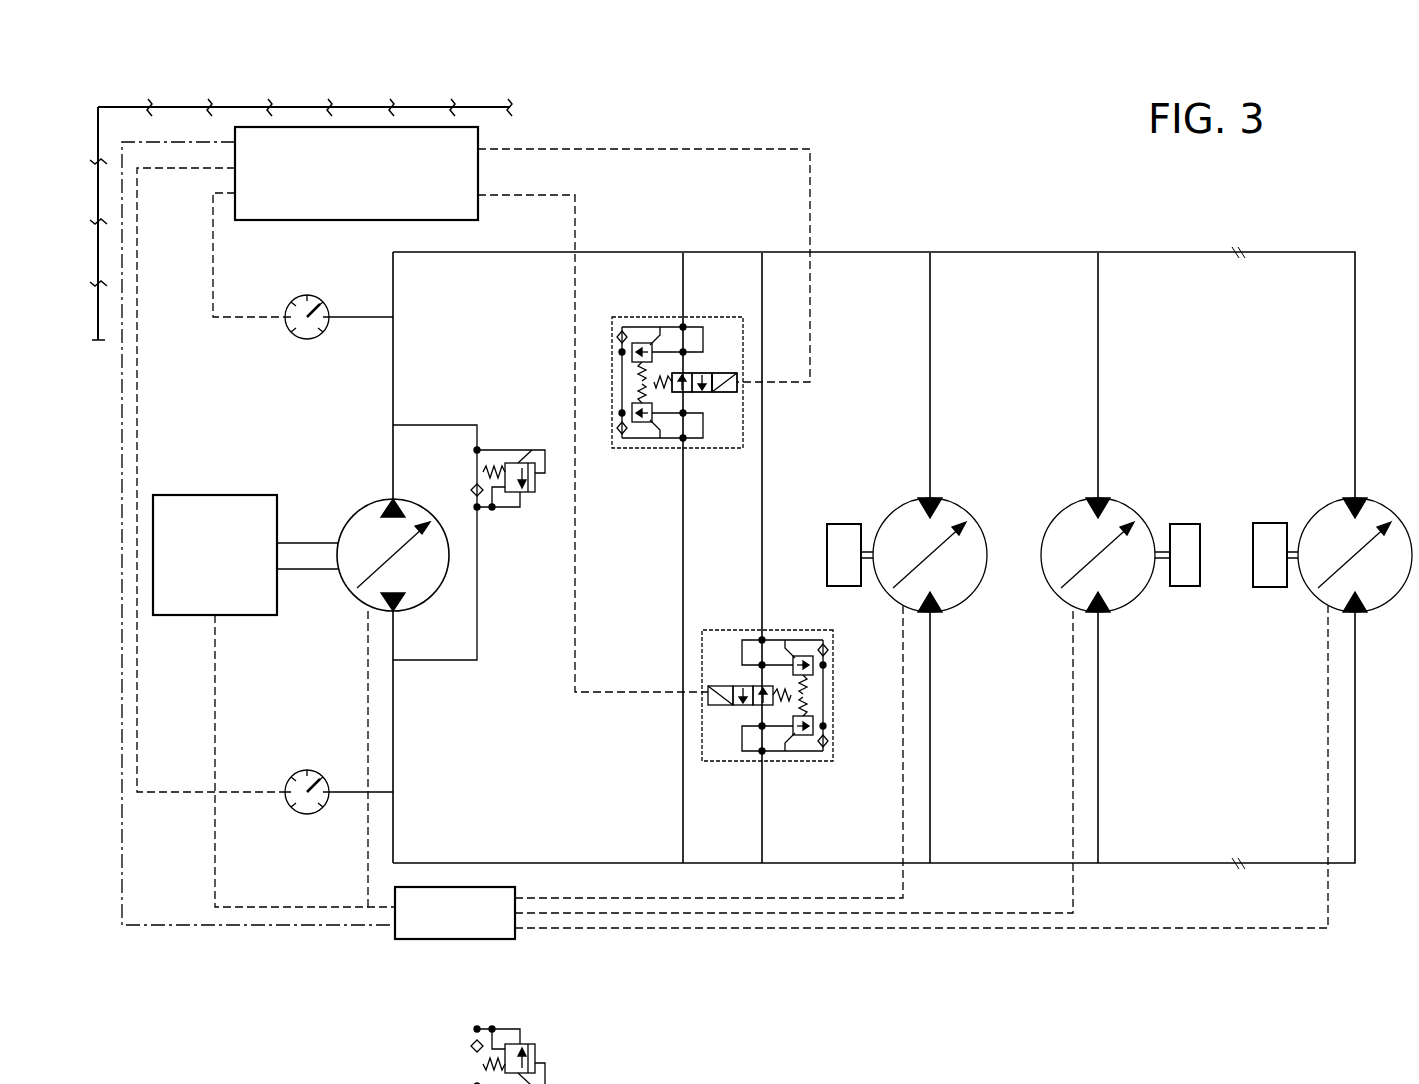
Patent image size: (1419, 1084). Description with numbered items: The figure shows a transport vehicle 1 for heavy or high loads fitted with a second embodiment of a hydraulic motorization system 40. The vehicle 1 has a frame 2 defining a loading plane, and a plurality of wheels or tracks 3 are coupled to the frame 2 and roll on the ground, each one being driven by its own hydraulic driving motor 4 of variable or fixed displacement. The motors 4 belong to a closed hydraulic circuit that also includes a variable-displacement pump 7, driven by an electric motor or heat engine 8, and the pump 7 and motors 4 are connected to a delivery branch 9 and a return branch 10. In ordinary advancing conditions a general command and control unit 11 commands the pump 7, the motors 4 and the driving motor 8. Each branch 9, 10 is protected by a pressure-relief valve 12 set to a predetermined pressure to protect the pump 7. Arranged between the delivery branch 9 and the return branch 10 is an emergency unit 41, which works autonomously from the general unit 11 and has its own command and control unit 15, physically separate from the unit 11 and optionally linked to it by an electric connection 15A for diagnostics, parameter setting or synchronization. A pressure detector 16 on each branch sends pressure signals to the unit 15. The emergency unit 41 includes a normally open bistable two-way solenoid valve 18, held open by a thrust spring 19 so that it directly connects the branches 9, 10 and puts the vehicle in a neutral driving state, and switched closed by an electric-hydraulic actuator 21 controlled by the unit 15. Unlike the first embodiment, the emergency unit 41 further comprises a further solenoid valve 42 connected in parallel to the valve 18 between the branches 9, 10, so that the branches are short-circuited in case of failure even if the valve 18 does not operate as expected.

The vehicle 1 is at (450, 82).
The frame 2 is at (122, 117).
The wheels or tracks 3 is at (843, 530).
The hydraulic driving motor 4 is at (970, 497).
The variable-displacement pump 7 is at (342, 606).
The driving motor of the pump 8 is at (218, 510).
The delivery branch 9 is at (494, 862).
The return branch 10 is at (481, 253).
The general command and control unit 11 is at (410, 930).
The pressure-relief valve 12 is at (562, 480).
The command and control unit 15 is at (490, 212).
The electric connection 15A is at (176, 890).
The pressure detector 16 is at (300, 305).
The two-way solenoid valve 18 is at (712, 392).
The thrust spring 19 is at (640, 384).
The electric-hydraulic actuator 21 is at (735, 382).
The system 40 is at (872, 238).
The emergency unit 41 is at (652, 133).
The further solenoid valve 42 is at (730, 700).